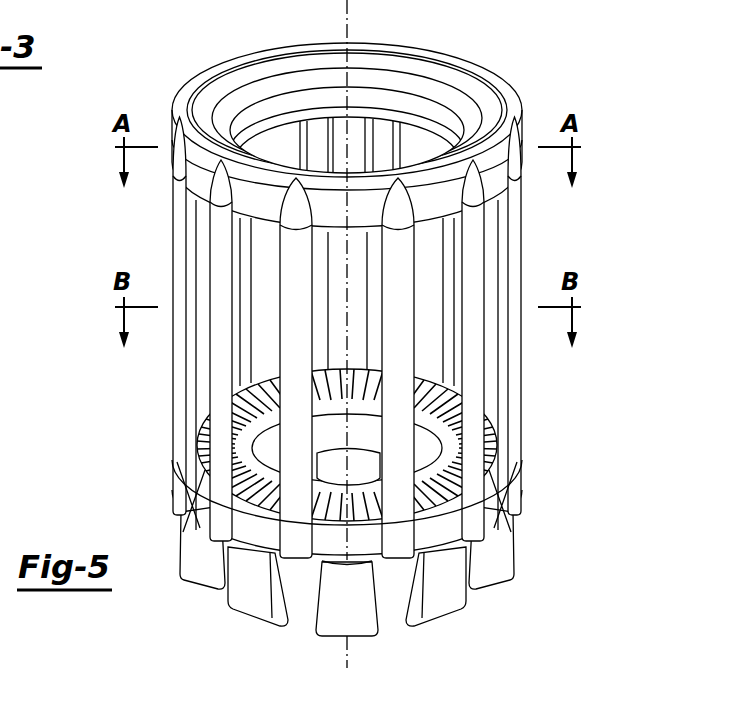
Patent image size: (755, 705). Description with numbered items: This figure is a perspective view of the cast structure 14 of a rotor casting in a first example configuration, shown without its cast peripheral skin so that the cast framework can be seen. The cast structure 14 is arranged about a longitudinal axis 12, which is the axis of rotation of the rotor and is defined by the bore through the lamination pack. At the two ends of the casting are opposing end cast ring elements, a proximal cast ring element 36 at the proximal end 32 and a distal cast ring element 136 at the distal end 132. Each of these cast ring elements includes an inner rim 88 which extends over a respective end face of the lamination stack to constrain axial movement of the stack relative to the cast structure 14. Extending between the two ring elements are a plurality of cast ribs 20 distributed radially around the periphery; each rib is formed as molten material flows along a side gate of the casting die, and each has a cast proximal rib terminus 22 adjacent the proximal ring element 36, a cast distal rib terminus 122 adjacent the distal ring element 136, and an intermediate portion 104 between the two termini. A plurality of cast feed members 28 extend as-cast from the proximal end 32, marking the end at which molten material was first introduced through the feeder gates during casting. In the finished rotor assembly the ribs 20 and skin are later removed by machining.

The axis 12 is at (353, 32).
The cast structure 14 is at (611, 271).
The cast ribs 20 is at (172, 247).
The cast proximal rib terminus 22 is at (178, 488).
The cast feed members 28 is at (202, 573).
The proximal end 32 is at (541, 505).
The proximal cast ring element 36 is at (204, 500).
The inner rim 88 is at (438, 95).
The intermediate portion of the axial rib 104 is at (182, 378).
The cast distal rib terminus 122 is at (182, 143).
The distal end 132 is at (507, 49).
The distal cast ring element 136 is at (185, 113).